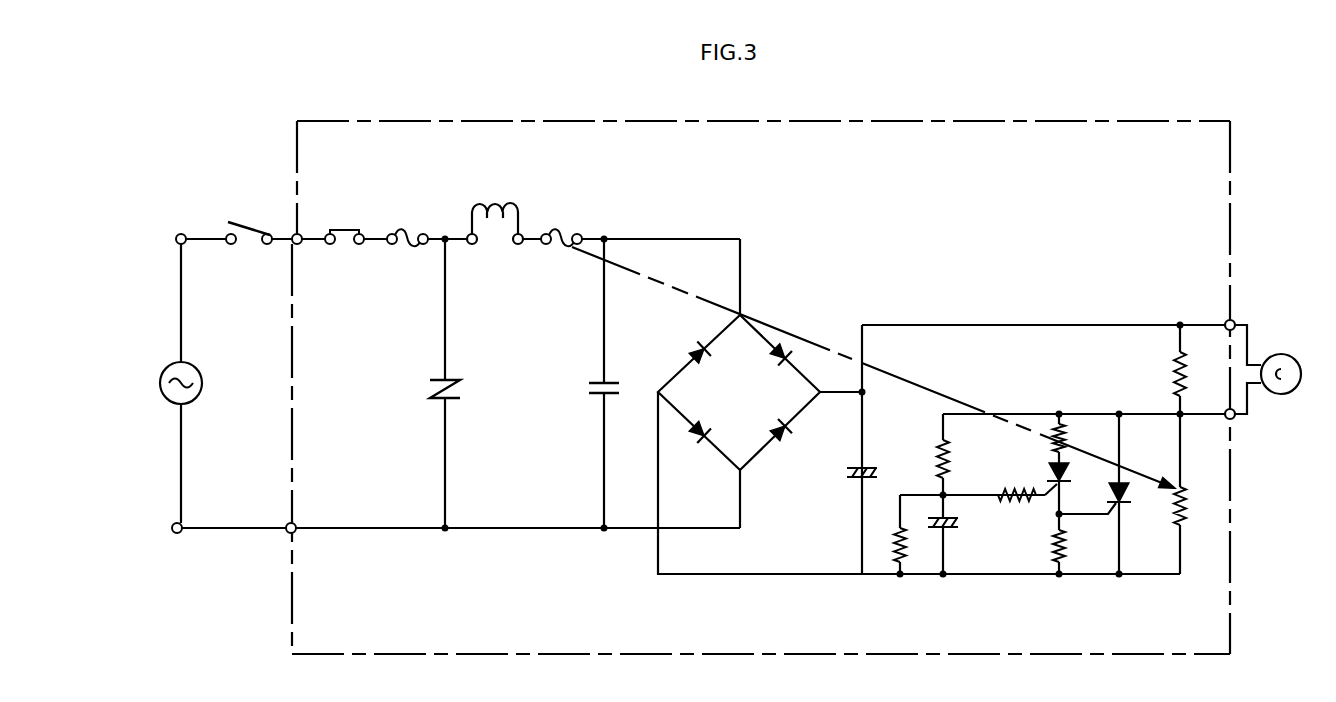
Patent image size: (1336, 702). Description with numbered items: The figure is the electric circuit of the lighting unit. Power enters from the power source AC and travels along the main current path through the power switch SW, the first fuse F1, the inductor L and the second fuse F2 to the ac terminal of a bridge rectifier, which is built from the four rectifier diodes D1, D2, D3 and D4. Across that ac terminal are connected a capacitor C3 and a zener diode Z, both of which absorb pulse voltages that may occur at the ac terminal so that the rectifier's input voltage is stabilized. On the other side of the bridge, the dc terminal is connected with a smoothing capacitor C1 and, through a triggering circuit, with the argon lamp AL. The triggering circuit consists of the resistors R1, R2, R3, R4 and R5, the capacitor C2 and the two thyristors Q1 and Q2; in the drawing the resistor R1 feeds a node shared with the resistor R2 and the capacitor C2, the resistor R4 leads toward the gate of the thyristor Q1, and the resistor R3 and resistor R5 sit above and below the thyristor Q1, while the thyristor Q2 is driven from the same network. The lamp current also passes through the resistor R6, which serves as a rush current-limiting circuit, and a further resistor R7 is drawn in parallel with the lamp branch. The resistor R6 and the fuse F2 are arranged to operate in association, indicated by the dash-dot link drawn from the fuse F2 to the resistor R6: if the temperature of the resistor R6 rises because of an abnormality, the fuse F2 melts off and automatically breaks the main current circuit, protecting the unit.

The power source AC is at (160, 383).
The power switch SW is at (343, 224).
The fuse F1 is at (408, 225).
The inductor L is at (495, 209).
The fuse F2 is at (561, 225).
The zener diode Z is at (435, 375).
The capacitor C3 is at (589, 372).
The rectifier diode D1 is at (680, 347).
The rectifier diode D2 is at (691, 449).
The rectifier diode D3 is at (786, 338).
The rectifier diode D4 is at (789, 448).
The smoothing capacitor C1 is at (874, 461).
The resistor R1 is at (958, 454).
The resistor R2 is at (913, 534).
The capacitor C2 is at (955, 534).
The resistor R4 is at (1017, 482).
The resistor R3 is at (1074, 438).
The thyristor Q1 is at (1073, 496).
The resistor R5 is at (1073, 552).
The thyristor Q2 is at (1103, 494).
The resistor R7 is at (1162, 369).
The resistor R6 is at (1194, 494).
The argon lamp AL is at (1263, 372).